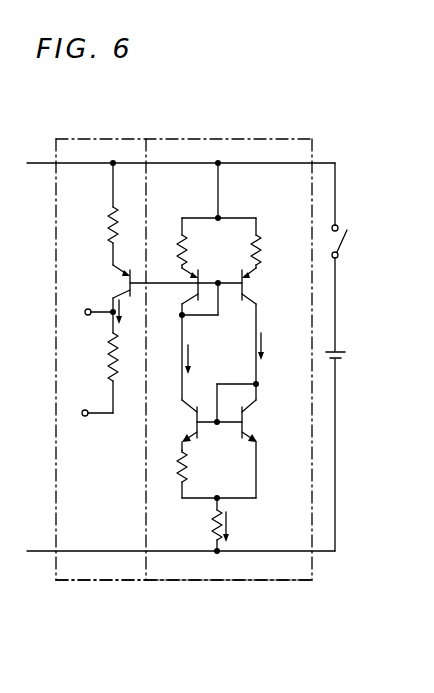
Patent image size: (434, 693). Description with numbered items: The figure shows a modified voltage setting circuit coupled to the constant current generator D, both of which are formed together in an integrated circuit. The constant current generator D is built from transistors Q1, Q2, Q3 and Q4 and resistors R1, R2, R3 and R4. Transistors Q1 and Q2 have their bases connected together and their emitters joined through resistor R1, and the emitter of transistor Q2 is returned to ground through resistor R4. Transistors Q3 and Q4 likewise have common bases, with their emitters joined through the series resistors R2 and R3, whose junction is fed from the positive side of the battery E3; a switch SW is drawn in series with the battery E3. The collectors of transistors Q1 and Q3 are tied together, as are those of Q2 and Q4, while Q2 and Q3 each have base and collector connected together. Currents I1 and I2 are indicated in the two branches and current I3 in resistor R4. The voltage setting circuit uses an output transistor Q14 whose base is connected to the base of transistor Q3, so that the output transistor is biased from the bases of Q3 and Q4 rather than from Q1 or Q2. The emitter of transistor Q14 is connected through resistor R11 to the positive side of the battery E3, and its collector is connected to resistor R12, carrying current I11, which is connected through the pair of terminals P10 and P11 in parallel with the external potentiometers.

The resistor R11 is at (98, 214).
The output transistor Q14 is at (127, 278).
The terminal P10 is at (86, 309).
The current I11 is at (135, 314).
The resistor R12 is at (98, 362).
The terminal P11 is at (82, 413).
The resistor R2 is at (180, 248).
The resistor R3 is at (258, 248).
The transistor Q3 is at (196, 295).
The transistor Q4 is at (249, 292).
The current I1 is at (199, 360).
The current I2 is at (271, 351).
The transistor Q1 is at (192, 431).
The transistor Q2 is at (256, 431).
The resistor R1 is at (185, 466).
The resistor R4 is at (212, 517).
The current I3 is at (237, 528).
The switch SW is at (355, 244).
The battery E3 is at (352, 357).
The constant current generator D is at (236, 569).